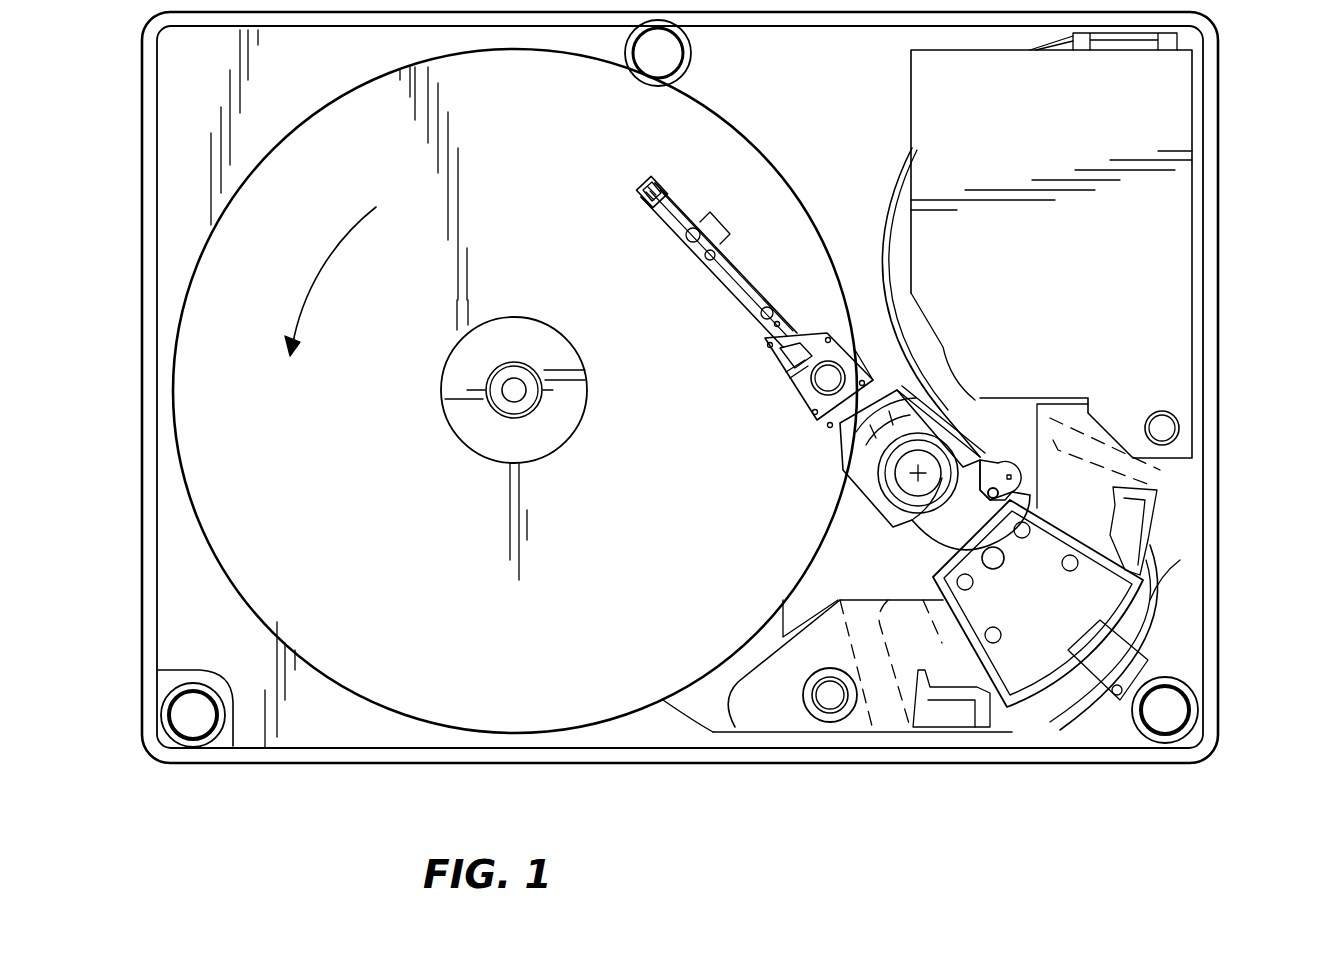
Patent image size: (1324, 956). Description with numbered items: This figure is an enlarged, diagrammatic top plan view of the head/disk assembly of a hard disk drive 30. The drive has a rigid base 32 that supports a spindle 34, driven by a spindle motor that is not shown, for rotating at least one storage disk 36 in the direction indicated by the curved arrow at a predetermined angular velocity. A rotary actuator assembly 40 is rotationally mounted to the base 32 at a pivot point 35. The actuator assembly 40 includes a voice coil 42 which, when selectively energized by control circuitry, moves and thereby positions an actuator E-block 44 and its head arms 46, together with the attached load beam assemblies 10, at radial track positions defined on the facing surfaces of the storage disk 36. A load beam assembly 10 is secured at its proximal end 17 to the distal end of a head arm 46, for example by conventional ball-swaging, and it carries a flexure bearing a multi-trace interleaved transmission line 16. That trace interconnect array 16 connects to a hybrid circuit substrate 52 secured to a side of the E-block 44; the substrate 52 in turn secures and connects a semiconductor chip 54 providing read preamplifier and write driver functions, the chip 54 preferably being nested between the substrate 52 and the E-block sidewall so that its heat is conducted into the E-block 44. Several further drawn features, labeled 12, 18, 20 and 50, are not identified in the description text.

The load beam assembly 10 is at (722, 311).
The actuator arm 12 is at (803, 328).
The multi-trace interleaved transmission line 16 is at (763, 270).
The proximal end 17 is at (860, 355).
The transducer head 18 is at (660, 186).
The slider 20 is at (641, 200).
The hard disk drive 30 is at (197, 820).
The rigid base 32 is at (305, 765).
The spindle 34 is at (550, 434).
The pivot point 35 is at (918, 473).
The storage disk 36 is at (437, 685).
The rotary actuator assembly 40 is at (880, 544).
The voice coil 42 is at (1148, 608).
The actuator E-block 44 is at (840, 468).
The head arms 46 is at (827, 428).
The magnet plate 50 is at (910, 356).
The hybrid circuit substrate 52 is at (960, 410).
The semiconductor chip 54 is at (973, 437).